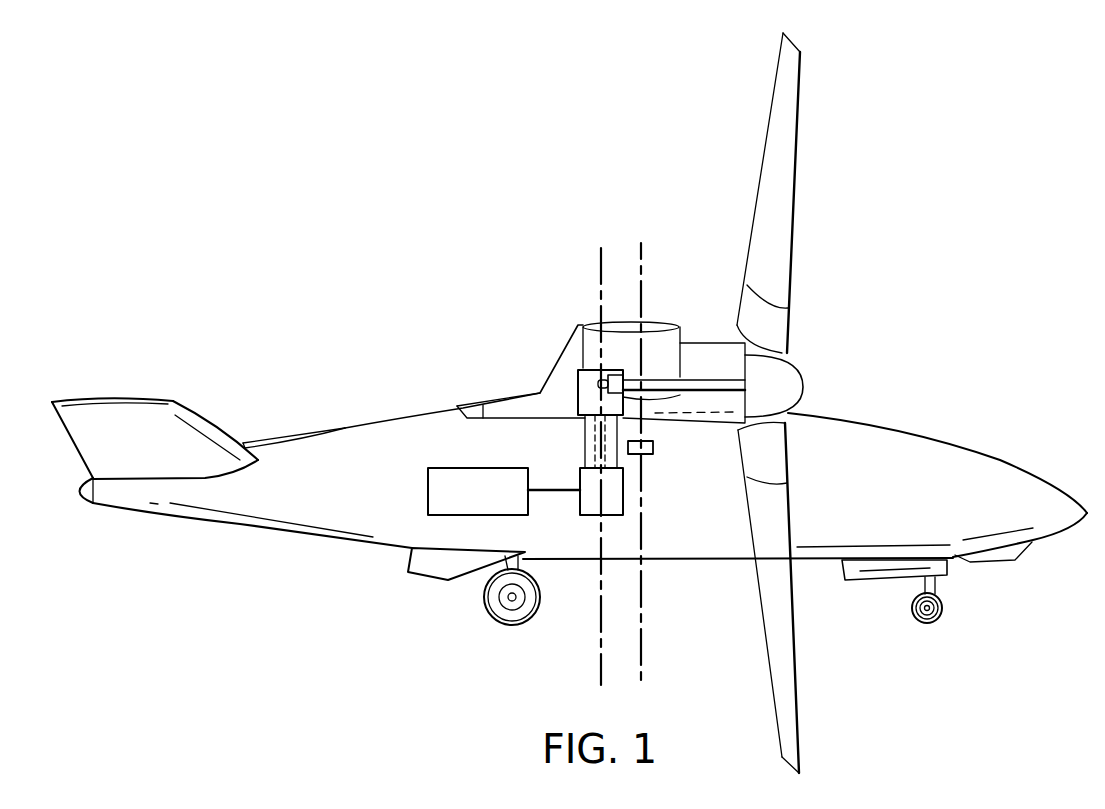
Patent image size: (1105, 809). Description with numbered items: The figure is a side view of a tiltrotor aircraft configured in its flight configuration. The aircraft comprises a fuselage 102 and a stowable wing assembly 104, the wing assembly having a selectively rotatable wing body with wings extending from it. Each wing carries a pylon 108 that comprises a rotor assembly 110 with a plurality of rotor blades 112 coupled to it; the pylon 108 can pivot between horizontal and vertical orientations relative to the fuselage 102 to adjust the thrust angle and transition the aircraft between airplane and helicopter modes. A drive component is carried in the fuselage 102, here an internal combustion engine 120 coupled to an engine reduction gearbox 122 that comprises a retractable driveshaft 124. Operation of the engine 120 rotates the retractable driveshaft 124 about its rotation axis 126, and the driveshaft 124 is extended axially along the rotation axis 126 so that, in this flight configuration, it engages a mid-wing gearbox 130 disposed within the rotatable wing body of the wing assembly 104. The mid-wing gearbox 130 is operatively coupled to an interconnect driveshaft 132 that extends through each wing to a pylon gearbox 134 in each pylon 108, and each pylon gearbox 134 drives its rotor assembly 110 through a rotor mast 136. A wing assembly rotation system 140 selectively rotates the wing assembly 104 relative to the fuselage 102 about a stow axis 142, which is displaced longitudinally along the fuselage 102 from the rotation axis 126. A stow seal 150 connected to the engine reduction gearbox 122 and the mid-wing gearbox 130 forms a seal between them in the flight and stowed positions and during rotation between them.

The fuselage 102 is at (703, 559).
The stowable wing assembly 104 is at (512, 393).
The pylon 108 is at (718, 343).
The rotor assembly 110 is at (808, 386).
The rotor blades 112 is at (795, 183).
The internal combustion engine 120 is at (428, 485).
The engine reduction gearbox 122 is at (580, 507).
The retractable driveshaft 124 is at (587, 437).
The rotation axis 126 is at (600, 677).
The mid-wing gearbox 130 is at (590, 368).
The interconnect driveshaft 132 is at (577, 387).
The pylon gearbox 134 is at (622, 370).
The rotor mast 136 is at (692, 393).
The wing assembly rotation system 140 is at (655, 447).
The stow axis 142 is at (642, 265).
The stow seal 150 is at (618, 460).